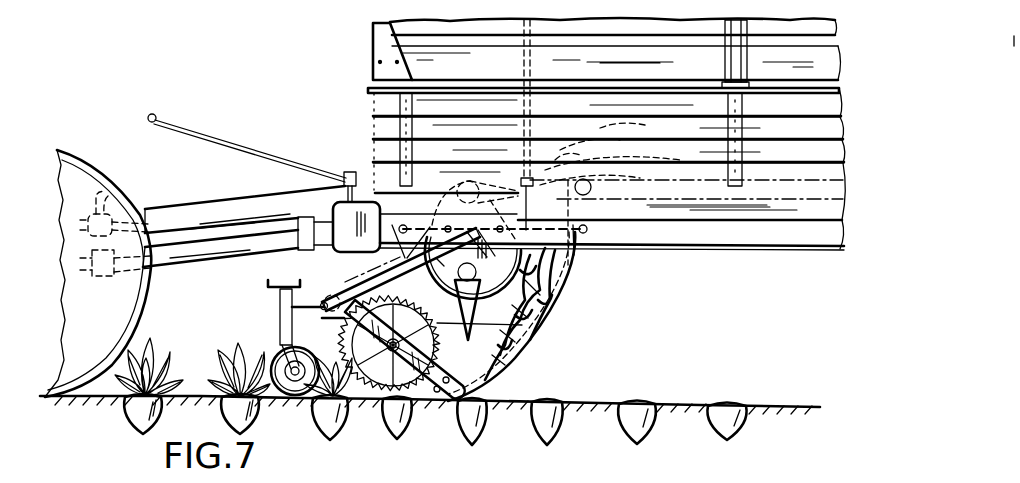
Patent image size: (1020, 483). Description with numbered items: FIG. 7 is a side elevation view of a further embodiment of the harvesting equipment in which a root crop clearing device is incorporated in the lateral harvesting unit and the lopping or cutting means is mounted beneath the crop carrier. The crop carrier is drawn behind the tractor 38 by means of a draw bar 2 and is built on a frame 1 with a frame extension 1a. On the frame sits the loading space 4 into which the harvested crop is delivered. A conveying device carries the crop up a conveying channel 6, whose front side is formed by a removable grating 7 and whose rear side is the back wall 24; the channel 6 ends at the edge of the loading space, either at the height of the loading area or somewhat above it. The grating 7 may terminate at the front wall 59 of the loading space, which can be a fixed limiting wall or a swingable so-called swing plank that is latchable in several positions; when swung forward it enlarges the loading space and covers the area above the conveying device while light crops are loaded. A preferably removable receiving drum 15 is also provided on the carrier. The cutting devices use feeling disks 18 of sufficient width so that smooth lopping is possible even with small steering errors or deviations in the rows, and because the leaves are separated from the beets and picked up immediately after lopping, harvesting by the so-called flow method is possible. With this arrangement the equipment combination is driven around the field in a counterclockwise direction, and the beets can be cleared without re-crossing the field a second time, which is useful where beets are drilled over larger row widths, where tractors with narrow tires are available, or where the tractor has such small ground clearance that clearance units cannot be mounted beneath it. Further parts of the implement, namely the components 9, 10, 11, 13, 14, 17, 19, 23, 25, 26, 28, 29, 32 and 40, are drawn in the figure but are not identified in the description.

The frame 1 is at (717, 213).
The frame extension 1a is at (382, 195).
The draw bar 2 is at (197, 208).
The loading space 4 is at (817, 57).
The conveying channel 6 is at (548, 207).
The grating 7 is at (438, 268).
The link bar 9 is at (391, 277).
The pivot axis line 10 is at (345, 284).
The hopper deflector 11 is at (483, 245).
The gauge wheel 13 is at (278, 318).
The beet tops 14 is at (454, 192).
The receiving drum 15 is at (457, 277).
The crank arm 17 is at (428, 364).
The feeling disks 18 is at (380, 392).
The sprocket wheel 19 is at (387, 348).
The elevator chain 23 is at (509, 372).
The back wall 24 is at (572, 250).
The control lever 25 is at (207, 131).
The pivot pin 26 is at (337, 320).
The gear housing 28 is at (321, 243).
The lower beam 29 is at (197, 250).
The beets 32 is at (435, 438).
The tractor 38 is at (82, 166).
The front post and ledge 40 is at (369, 116).
The front wall 59 is at (532, 80).